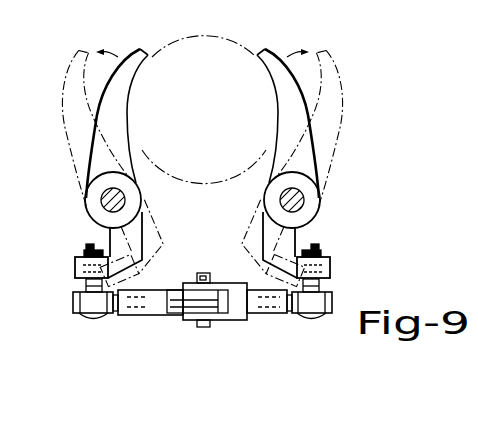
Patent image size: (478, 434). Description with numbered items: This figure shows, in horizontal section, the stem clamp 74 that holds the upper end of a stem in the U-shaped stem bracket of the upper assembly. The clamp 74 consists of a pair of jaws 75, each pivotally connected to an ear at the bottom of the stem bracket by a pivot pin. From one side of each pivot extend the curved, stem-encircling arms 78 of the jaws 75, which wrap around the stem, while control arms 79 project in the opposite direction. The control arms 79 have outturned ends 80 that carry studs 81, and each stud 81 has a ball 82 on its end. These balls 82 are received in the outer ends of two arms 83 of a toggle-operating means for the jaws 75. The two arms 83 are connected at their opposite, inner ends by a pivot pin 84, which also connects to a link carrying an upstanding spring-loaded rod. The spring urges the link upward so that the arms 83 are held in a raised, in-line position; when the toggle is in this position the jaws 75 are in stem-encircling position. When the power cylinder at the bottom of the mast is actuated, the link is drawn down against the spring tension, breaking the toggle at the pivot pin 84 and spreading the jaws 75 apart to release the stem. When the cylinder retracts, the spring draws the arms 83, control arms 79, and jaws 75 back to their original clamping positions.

The stem clamp 74 is at (202, 161).
The jaws 75 is at (91, 184).
The curved, stem-encircling arms 78 is at (149, 57).
The control arms 79 is at (87, 246).
The outturned ends 80 is at (75, 259).
The studs 81 is at (85, 284).
The balls 82 is at (84, 321).
The arms of toggle-operating means 83 is at (147, 317).
The pivot pin 84 is at (205, 328).